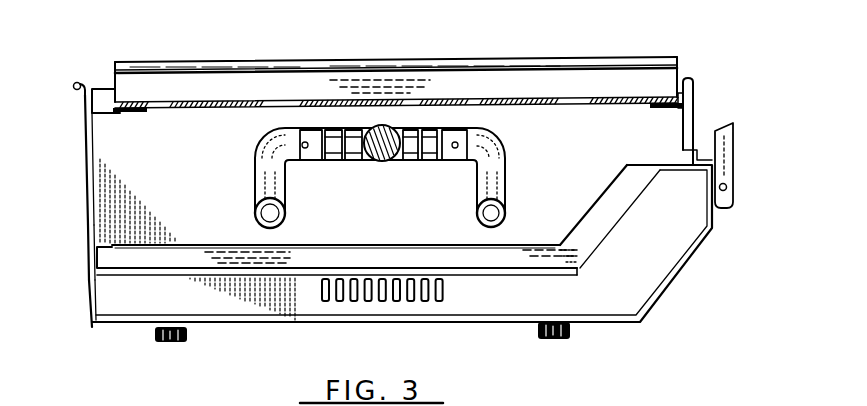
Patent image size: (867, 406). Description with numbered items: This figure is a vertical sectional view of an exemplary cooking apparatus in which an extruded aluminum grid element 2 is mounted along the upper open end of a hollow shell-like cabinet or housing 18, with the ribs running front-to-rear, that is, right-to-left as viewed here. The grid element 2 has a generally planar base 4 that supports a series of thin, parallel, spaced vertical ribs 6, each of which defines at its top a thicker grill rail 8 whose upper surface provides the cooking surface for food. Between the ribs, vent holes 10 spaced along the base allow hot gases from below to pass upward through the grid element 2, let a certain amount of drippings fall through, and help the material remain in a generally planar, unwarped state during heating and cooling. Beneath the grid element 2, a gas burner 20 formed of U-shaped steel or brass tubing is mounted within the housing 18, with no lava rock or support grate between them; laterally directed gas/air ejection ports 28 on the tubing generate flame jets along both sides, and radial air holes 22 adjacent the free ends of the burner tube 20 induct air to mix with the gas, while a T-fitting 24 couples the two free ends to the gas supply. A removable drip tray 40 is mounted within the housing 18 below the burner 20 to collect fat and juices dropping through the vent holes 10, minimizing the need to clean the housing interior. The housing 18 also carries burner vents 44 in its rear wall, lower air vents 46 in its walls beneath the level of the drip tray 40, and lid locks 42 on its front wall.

The grid element 2 is at (502, 56).
The planar base 4 is at (163, 107).
The vertical ribs 6 is at (417, 83).
The grill rail 8 is at (188, 62).
The vent holes 10 is at (220, 107).
The housing 18 is at (82, 172).
The gas burner 20 is at (507, 172).
The radial air holes 22 is at (285, 126).
The T-fitting 24 is at (376, 161).
The gas/air ejection ports 28 is at (257, 212).
The drip tray 40 is at (495, 263).
The lid locks 42 is at (728, 167).
The burner vents 44 is at (90, 222).
The lower air vents 46 is at (88, 290).